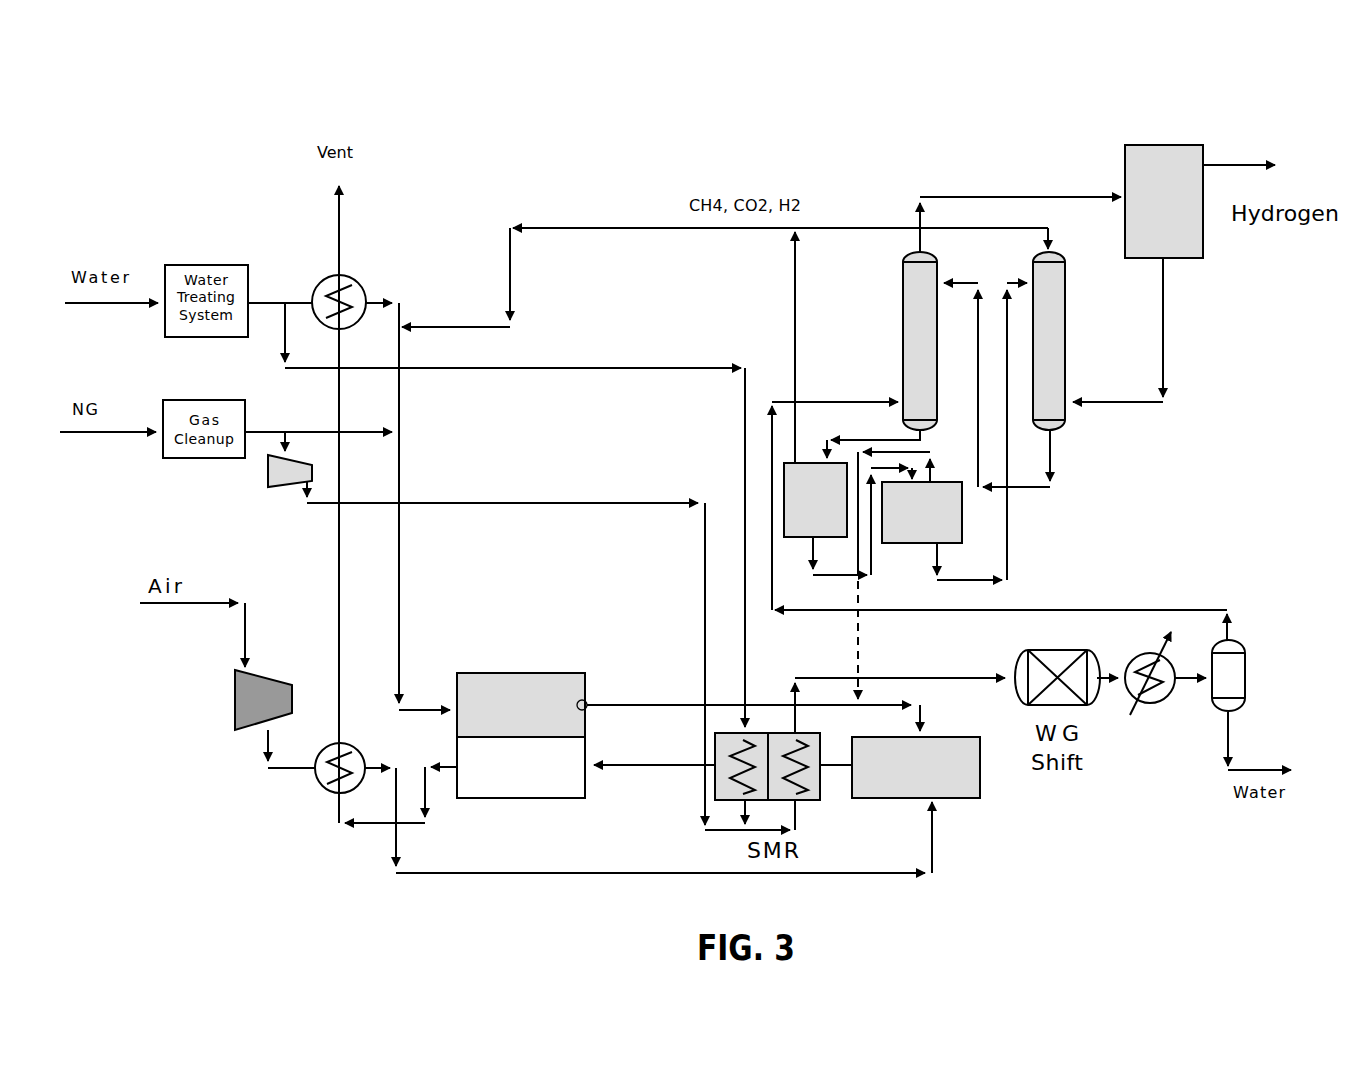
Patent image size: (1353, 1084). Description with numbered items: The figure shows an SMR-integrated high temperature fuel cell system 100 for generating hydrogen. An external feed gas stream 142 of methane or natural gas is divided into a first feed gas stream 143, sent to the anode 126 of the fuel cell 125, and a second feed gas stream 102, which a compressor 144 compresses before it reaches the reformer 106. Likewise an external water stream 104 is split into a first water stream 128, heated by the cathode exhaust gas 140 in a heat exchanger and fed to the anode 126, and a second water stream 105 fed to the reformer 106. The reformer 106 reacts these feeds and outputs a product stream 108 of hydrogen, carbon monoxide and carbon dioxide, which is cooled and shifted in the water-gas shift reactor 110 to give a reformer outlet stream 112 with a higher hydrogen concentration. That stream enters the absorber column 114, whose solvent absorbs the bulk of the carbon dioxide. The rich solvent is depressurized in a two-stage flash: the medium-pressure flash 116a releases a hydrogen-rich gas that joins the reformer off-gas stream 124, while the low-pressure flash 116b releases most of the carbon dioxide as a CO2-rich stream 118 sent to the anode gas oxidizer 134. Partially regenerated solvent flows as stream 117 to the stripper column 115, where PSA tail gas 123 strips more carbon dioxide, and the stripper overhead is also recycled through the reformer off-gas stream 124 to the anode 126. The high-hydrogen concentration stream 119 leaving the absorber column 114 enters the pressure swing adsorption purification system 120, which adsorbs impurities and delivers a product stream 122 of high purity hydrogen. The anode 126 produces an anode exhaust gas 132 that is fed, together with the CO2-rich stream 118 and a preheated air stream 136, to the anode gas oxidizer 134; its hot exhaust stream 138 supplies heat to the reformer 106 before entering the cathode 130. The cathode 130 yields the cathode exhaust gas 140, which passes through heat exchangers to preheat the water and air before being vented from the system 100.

The SMR-integrated high temperature fuel cell system 100 is at (488, 66).
The second feed gas stream 102 is at (551, 650).
The water stream 104 is at (111, 325).
The second water stream 105 is at (515, 515).
The reformer 106 is at (818, 793).
The product stream 108 is at (900, 685).
The reactor 110 is at (1090, 707).
The reformer outlet stream 112 is at (835, 486).
The absorber column 114 is at (882, 355).
The stripper column 115 is at (1030, 369).
The medium-pressure flash 116a is at (784, 470).
The low-pressure flash 116b is at (968, 540).
The stream 117 is at (1002, 441).
The CO2-rich stream 118 is at (1001, 636).
The high-hydrogen concentration stream 119 is at (1020, 205).
The pressure swing adsorption purification system 120 is at (1152, 168).
The product stream 122 is at (1241, 147).
The PSA tail gas 123 is at (1118, 350).
The reformer off-gas stream 124 is at (725, 325).
The fuel cell 125 is at (520, 685).
The anode 126 is at (582, 675).
The first water stream 128 is at (349, 481).
The cathode 130 is at (552, 800).
The anode exhaust gas 132 is at (753, 699).
The anode gas oxidizer 134 is at (944, 784).
The air stream 136 is at (227, 685).
The exhaust stream 138 is at (748, 804).
The cathode exhaust gas 140 is at (621, 808).
The feed gas stream 142 is at (108, 450).
The first feed gas stream 143 is at (318, 419).
The compressor 144 is at (270, 488).